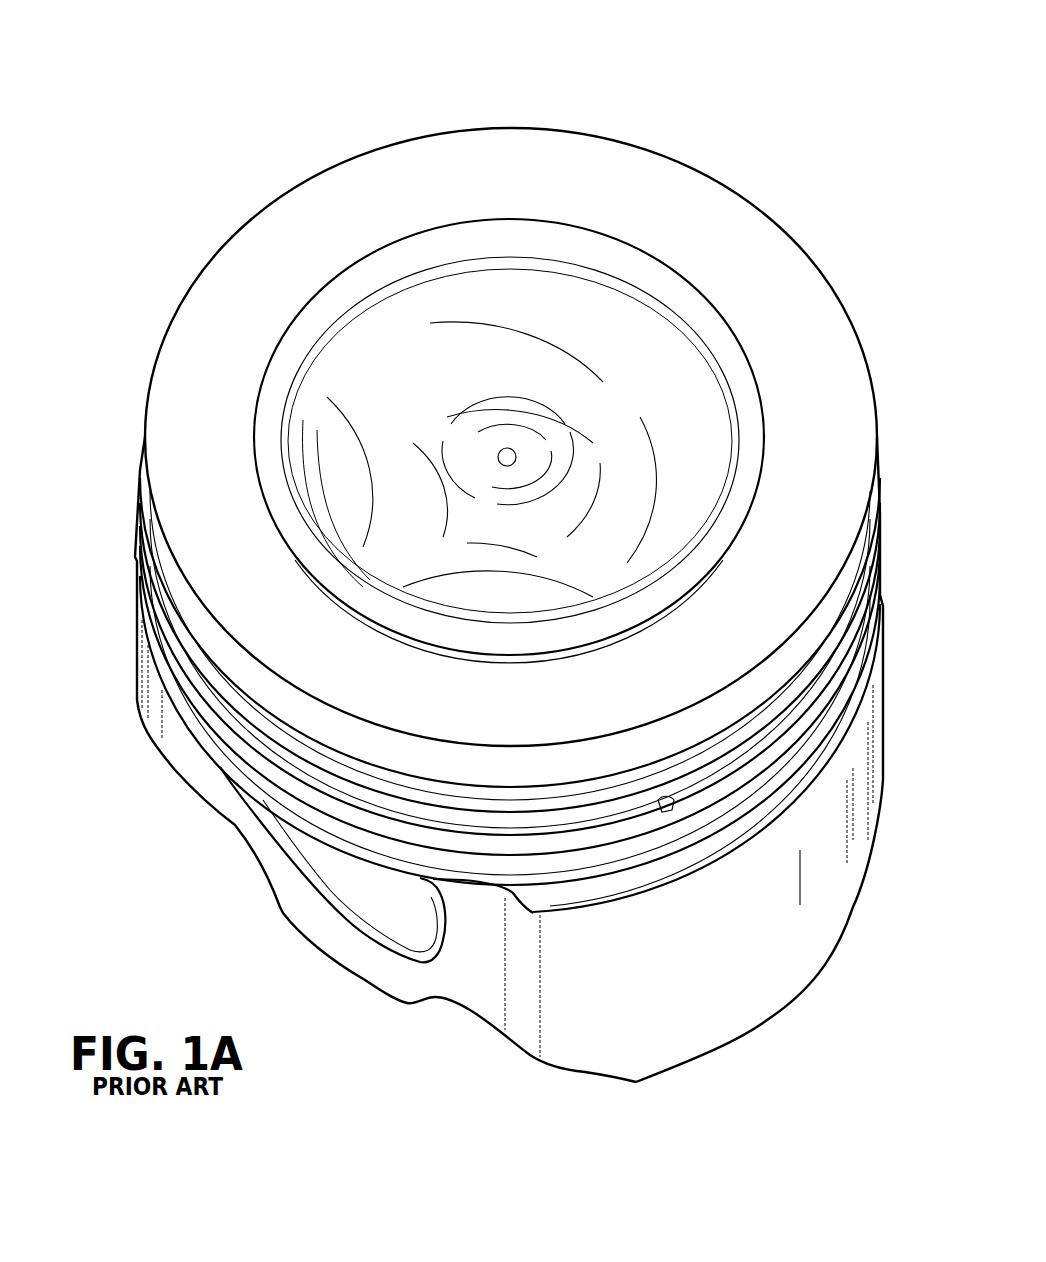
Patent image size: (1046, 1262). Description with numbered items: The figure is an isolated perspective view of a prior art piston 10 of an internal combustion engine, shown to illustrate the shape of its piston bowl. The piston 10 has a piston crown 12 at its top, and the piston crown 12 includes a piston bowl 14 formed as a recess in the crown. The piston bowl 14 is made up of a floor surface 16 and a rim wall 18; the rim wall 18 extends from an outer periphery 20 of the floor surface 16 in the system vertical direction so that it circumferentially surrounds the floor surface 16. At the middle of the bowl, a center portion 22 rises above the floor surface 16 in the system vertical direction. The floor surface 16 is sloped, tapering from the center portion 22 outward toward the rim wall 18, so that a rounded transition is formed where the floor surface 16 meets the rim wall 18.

The piston 10 is at (174, 84).
The piston crown 12 is at (103, 871).
The piston bowl 14 is at (116, 210).
The floor surface 16 is at (453, 358).
The rim wall 18 is at (744, 435).
The outer periphery 20 is at (357, 313).
The center portion 22 is at (507, 455).